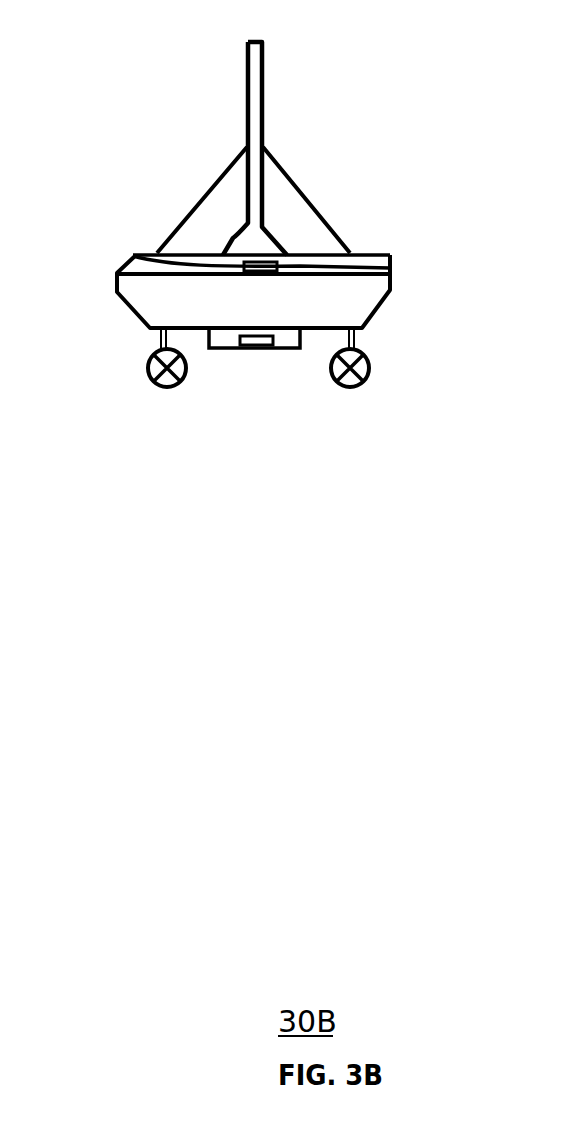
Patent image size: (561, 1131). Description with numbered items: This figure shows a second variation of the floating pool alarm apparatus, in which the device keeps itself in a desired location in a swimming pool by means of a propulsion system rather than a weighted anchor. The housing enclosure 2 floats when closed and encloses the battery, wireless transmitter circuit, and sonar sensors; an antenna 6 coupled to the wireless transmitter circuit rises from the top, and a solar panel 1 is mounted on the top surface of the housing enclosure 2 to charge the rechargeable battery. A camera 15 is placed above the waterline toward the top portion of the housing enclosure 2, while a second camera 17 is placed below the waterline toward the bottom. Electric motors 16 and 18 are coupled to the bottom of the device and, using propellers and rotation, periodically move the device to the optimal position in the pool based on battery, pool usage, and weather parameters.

The solar panel 1 is at (200, 177).
The housing enclosure 2 is at (392, 263).
The antenna 6 is at (247, 62).
The camera 15 is at (160, 256).
The electric motor 16 is at (352, 388).
The camera 17 is at (255, 346).
The electric motor 18 is at (170, 388).